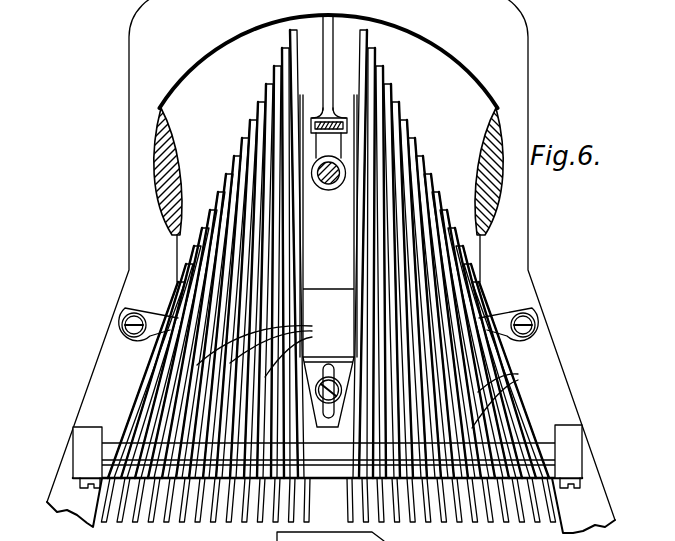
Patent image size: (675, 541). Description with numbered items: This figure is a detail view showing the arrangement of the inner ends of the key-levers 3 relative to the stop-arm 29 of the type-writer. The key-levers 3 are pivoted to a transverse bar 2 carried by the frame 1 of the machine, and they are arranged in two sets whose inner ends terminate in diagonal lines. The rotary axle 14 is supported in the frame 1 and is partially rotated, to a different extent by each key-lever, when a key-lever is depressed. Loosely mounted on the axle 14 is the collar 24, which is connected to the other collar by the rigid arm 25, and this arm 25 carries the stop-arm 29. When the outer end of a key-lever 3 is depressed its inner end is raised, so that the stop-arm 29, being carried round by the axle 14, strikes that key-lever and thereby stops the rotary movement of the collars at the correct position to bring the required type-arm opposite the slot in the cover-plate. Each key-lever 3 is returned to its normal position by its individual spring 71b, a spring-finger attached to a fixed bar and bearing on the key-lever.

The frame 1 is at (598, 475).
The transverse bar 2 is at (546, 438).
The key-levers 3 is at (262, 510).
The rotary axle 14 is at (323, 186).
The collar 24 is at (336, 186).
The rigid arm 25 is at (331, 114).
The stop-arm 29 is at (330, 50).
The spring 71b is at (357, 345).